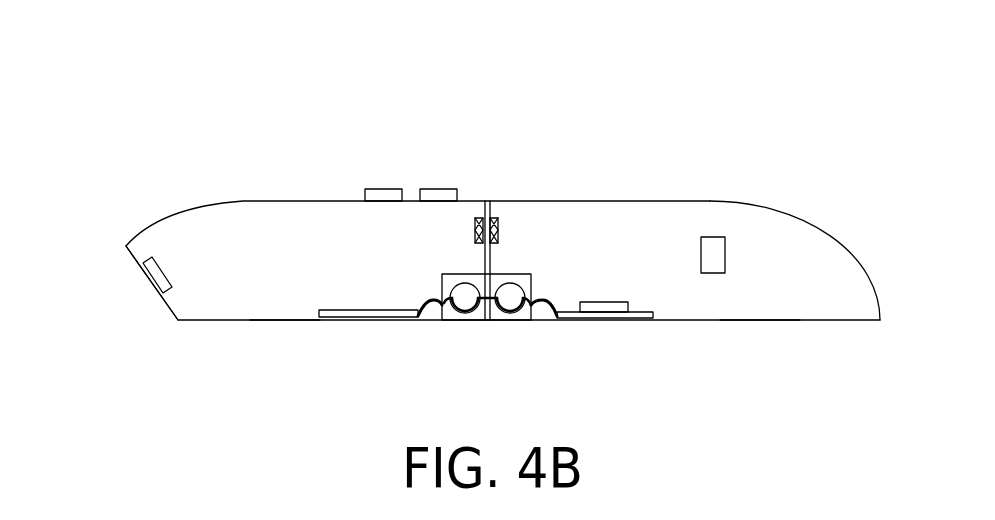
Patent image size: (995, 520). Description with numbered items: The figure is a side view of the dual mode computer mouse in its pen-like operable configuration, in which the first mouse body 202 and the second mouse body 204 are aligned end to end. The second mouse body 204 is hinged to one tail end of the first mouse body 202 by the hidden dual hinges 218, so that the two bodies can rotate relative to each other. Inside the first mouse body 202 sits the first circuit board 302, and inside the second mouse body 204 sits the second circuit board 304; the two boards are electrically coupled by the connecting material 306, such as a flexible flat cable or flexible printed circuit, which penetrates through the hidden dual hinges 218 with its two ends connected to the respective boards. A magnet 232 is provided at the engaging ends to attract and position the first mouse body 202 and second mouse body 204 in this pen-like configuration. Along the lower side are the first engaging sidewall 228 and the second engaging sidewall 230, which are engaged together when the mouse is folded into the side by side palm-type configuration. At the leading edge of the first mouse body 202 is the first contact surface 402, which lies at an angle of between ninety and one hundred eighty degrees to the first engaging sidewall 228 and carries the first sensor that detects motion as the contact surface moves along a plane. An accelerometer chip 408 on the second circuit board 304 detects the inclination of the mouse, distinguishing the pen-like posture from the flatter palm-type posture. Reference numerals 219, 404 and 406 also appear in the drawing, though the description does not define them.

The first mouse body 202 is at (250, 192).
The second mouse body 204 is at (772, 192).
The hidden dual hinges 218 is at (495, 280).
The tip edge 219 is at (130, 253).
The first engaging sidewall 228 is at (285, 320).
The second engaging sidewall 230 is at (747, 321).
The magnet 232 is at (495, 217).
The first circuit board 302 is at (390, 318).
The second circuit board 304 is at (597, 318).
The connecting material 306 is at (457, 320).
The first contact surface 402 is at (150, 260).
The component 404 is at (713, 237).
The buttons 406 is at (440, 189).
The accelerometer chip 408 is at (615, 302).